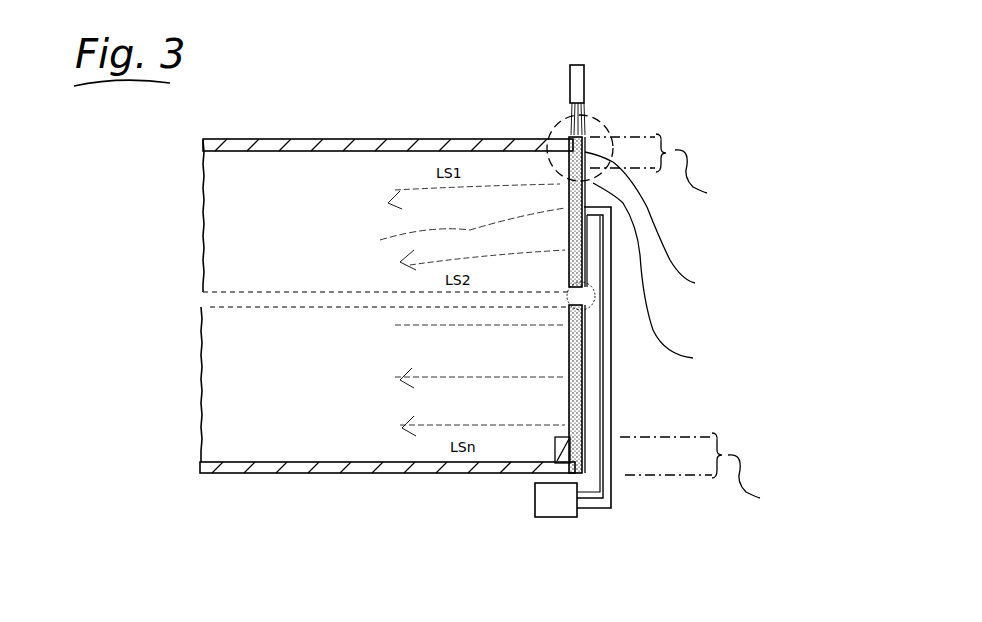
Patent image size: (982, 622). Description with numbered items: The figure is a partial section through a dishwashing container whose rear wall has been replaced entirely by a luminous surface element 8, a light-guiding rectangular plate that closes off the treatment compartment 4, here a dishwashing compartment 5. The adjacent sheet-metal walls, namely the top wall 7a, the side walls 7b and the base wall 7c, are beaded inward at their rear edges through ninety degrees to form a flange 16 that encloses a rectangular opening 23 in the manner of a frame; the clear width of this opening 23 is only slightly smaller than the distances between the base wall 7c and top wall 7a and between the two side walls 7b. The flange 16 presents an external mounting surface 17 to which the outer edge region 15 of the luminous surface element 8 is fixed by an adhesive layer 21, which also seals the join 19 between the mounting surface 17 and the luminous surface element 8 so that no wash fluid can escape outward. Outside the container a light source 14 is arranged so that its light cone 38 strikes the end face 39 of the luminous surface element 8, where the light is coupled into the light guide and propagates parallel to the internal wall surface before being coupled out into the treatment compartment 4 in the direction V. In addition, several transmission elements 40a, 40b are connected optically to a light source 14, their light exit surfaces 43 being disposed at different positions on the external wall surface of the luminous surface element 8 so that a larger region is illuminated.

The treatment compartment 4 is at (350, 362).
The dishwashing compartment 5 is at (350, 362).
The top wall 7a is at (352, 146).
The side wall 7b is at (240, 192).
The base wall 7c is at (236, 466).
The luminous surface element 8 is at (565, 330).
The light source 14 is at (584, 79).
The outer edge region 15 is at (687, 330).
The flange 16 is at (567, 175).
The external mounting surface 17 is at (664, 225).
The join 19 is at (563, 420).
The adhesive layer 21 is at (557, 434).
The opening 23 is at (444, 310).
The light cone 38 is at (594, 118).
The end face 39 is at (567, 122).
The transmission element 40a is at (597, 420).
The transmission element 40b is at (611, 303).
The light exit surface 43 is at (560, 253).
The direction of light V is at (738, 378).